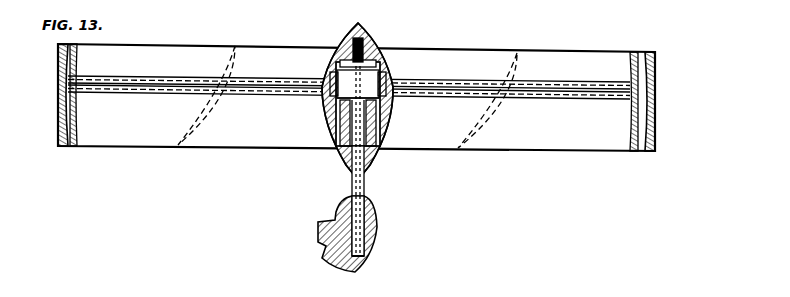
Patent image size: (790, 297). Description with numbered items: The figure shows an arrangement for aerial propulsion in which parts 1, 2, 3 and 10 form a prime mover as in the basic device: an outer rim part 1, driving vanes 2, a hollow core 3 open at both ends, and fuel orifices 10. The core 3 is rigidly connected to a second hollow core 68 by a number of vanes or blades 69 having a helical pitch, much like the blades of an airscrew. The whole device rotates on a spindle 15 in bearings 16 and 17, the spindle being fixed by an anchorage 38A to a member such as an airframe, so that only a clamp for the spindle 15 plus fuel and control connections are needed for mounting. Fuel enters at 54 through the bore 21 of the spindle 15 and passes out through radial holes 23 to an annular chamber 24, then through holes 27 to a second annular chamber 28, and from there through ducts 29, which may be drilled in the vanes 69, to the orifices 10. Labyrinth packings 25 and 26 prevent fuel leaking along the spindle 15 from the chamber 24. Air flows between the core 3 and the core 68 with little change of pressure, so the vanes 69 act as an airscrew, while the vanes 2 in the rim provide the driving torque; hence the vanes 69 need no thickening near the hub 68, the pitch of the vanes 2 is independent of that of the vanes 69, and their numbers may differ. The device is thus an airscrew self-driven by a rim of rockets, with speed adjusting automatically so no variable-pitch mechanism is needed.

The rim part 1 is at (61, 141).
The vanes 2 is at (76, 139).
The core 3 is at (75, 66).
The fuel orifices 10 is at (80, 88).
The spindle 15 is at (366, 193).
The bearing 16 is at (340, 43).
The bearing 17 is at (368, 158).
The bore 21 is at (370, 259).
The radial holes 23 is at (398, 102).
The annular chamber 24 is at (327, 74).
The labyrinth packing 25 is at (332, 57).
The labyrinth packing 26 is at (392, 121).
The holes 27 is at (391, 72).
The annular chamber 28 is at (390, 96).
The ducts 29 is at (222, 57).
The anchorage 38A is at (377, 225).
The fuel entry 54 is at (307, 7).
The second hollow core 68 is at (338, 158).
The vanes or blades 69 is at (265, 142).